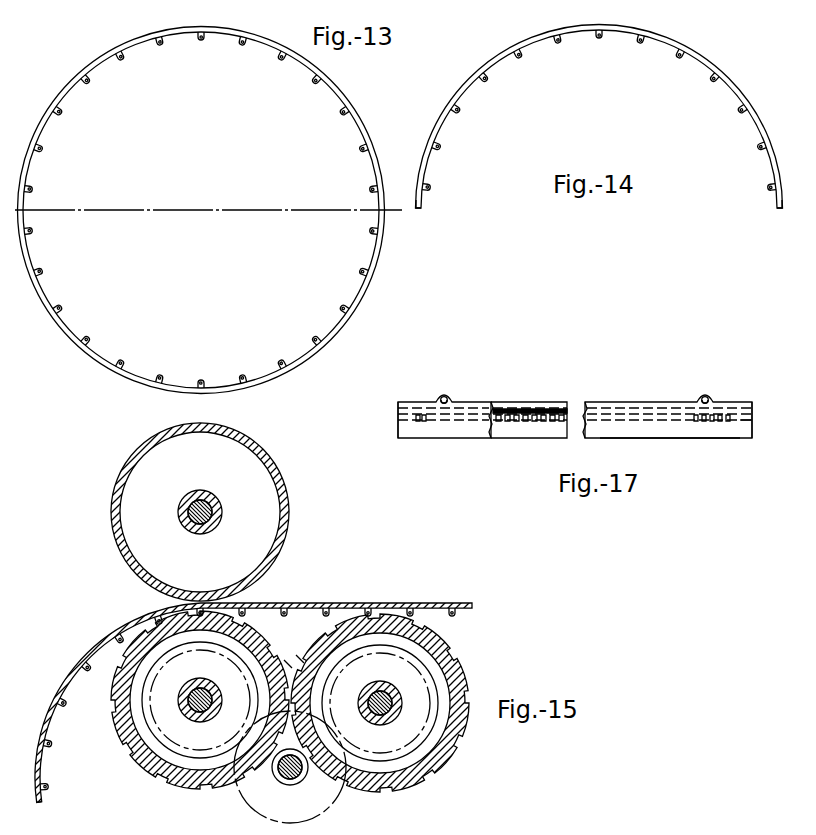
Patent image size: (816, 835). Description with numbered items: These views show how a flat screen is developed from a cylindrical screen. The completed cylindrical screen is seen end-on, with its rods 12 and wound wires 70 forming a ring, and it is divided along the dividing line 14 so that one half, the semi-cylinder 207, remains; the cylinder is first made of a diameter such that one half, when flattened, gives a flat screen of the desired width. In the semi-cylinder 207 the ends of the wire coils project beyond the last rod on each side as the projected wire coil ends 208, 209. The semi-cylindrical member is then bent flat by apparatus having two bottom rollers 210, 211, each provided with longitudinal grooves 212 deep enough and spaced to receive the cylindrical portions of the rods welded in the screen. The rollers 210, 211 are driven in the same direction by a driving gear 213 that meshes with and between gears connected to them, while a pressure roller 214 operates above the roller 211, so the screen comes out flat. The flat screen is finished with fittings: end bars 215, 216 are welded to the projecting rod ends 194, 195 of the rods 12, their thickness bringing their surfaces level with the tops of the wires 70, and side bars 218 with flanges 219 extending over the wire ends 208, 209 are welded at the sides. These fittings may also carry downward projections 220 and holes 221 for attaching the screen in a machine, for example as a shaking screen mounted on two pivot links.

In FIG. 13, the dividing line 14 is at (211, 222).
In FIG. 14, the semi-cylinder 207 is at (446, 111).
In FIG. 14, the projected wire coil ends 208 is at (779, 205).
In FIG. 17, the projected wire coil ends 208 is at (418, 422).
In FIG. 15, the projected wire coil ends 208 is at (466, 603).
In FIG. 14, the projected wire coil ends 209 is at (424, 205).
In FIG. 15, the projected wire coil ends 209 is at (45, 802).
In FIG. 15, the bottom roller 210 is at (460, 660).
In FIG. 15, the bottom roller 211 is at (130, 757).
In FIG. 15, the longitudinal grooves 212 is at (302, 660).
In FIG. 15, the driving gear 213 is at (332, 800).
In FIG. 15, the pressure roller 214 is at (112, 514).
In FIG. 17, the projecting rod ends 195 is at (407, 400).
In FIG. 17, the projecting rod ends 194 is at (748, 410).
In FIG. 17, the end bar 216 is at (398, 417).
In FIG. 17, the end bar 215 is at (751, 418).
In FIG. 17, the side bar 218 is at (645, 402).
In FIG. 17, the flange 219 is at (648, 432).
In FIG. 17, the downward projection 220 is at (447, 398).
In FIG. 17, the hole 221 is at (449, 400).
In FIG. 17, the rods 12 is at (545, 409).
In FIG. 17, the wires 70 is at (518, 423).